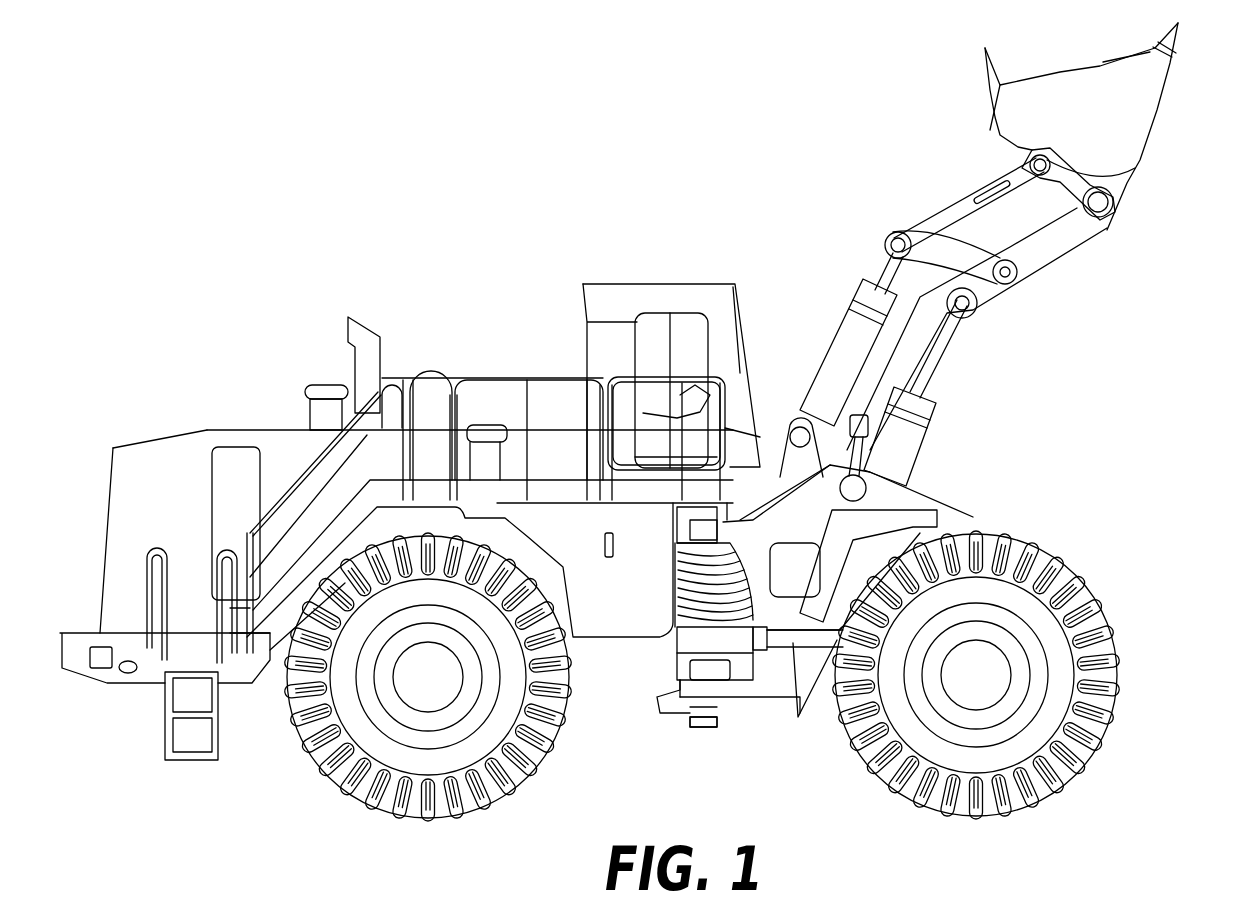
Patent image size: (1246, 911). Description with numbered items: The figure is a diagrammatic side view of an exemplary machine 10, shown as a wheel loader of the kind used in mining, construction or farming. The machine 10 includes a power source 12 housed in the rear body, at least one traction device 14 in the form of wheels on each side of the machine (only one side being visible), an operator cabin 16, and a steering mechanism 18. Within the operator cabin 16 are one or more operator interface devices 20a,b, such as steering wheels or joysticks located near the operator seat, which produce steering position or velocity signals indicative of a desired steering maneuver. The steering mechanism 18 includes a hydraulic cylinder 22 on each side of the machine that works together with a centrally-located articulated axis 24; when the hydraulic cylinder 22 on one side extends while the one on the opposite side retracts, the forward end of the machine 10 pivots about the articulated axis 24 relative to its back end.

The machine 10 is at (802, 232).
The power source 12 is at (177, 517).
The traction device 14 is at (1113, 683).
The operator cabin 16 is at (688, 347).
The steering mechanism 18 is at (720, 742).
The operator interface devices 20a,b is at (713, 365).
The hydraulic cylinder 22 is at (793, 648).
The articulated axis 24 is at (693, 730).